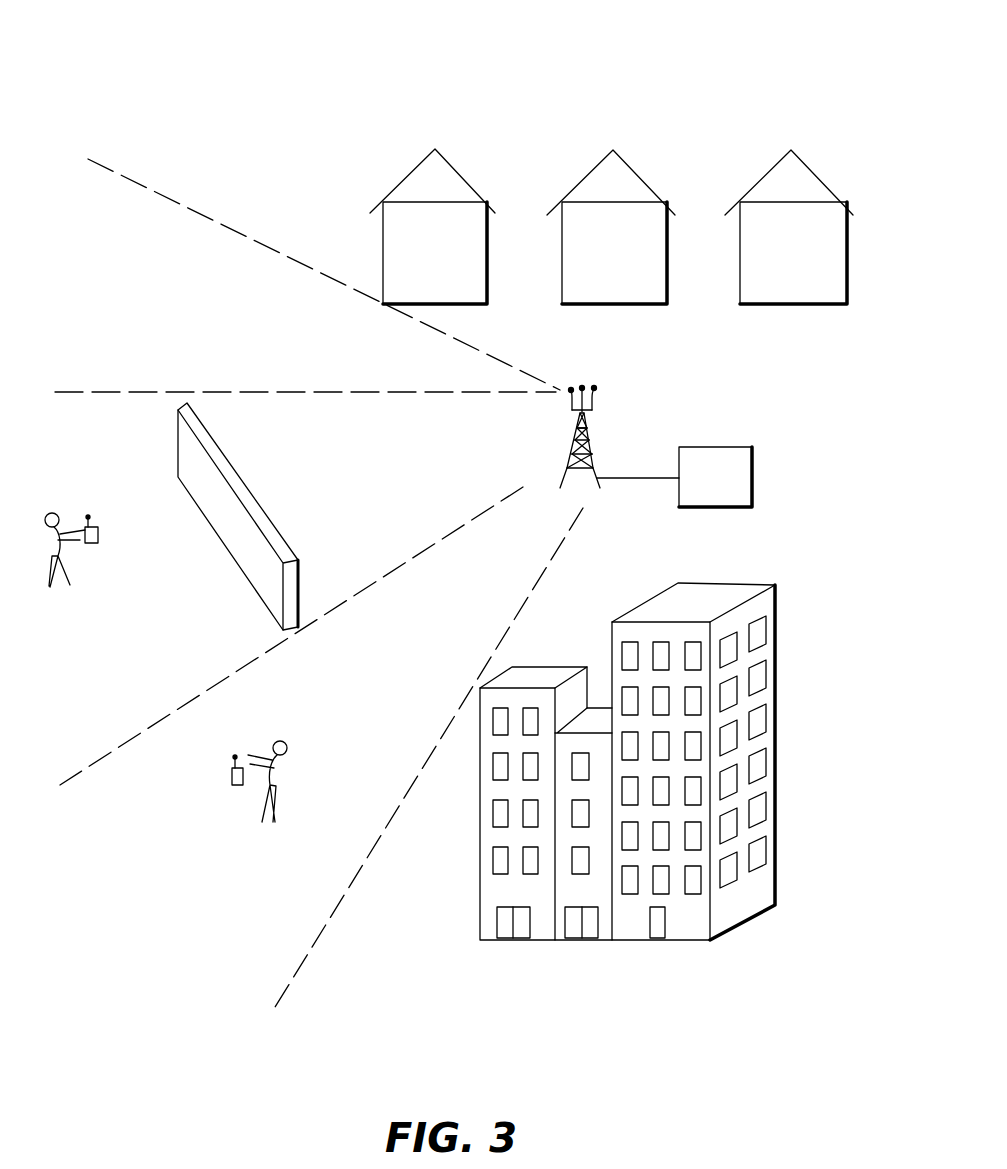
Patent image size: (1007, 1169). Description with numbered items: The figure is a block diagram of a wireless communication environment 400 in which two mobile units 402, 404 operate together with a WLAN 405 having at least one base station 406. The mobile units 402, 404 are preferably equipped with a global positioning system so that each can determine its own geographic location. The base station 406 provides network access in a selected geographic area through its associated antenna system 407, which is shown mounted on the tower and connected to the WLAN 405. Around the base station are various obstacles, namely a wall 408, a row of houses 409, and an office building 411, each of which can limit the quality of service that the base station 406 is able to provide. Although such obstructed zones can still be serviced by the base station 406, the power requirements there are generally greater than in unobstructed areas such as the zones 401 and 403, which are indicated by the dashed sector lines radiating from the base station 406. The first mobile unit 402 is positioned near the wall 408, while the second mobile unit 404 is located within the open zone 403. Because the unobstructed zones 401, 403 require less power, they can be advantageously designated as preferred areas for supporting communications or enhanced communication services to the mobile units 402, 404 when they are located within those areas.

The wireless communication environment 400 is at (180, 35).
The zone 401 is at (140, 293).
The mobile unit 402 is at (98, 533).
The zone 403 is at (210, 890).
The mobile unit 404 is at (232, 780).
The WLAN 405 is at (752, 478).
The base station 406 is at (595, 463).
The antenna system 407 is at (597, 402).
The wall 408 is at (243, 480).
The houses 409 is at (452, 170).
The office building 411 is at (776, 751).